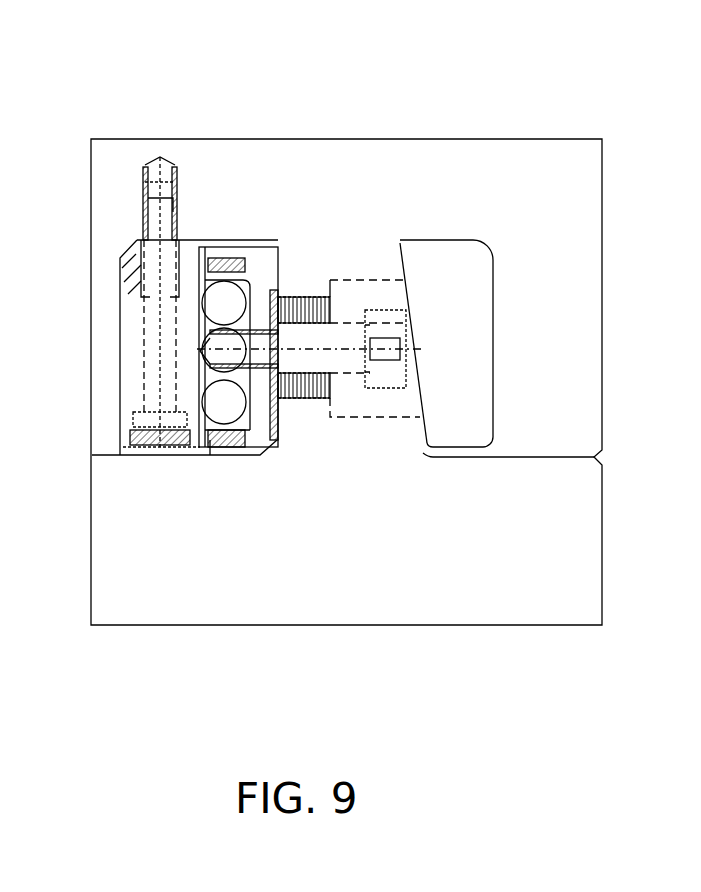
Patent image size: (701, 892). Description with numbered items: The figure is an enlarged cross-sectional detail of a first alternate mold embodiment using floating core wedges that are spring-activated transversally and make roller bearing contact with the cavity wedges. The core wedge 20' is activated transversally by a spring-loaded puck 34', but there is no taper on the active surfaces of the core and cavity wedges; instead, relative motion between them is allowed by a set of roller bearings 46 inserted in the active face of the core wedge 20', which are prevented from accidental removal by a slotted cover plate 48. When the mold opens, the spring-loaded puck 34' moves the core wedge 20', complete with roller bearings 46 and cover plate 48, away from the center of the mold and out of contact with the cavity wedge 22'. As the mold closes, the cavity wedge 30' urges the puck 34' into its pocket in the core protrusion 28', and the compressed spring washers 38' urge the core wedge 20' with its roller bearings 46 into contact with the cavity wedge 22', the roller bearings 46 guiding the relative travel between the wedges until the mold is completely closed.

The cavity wedge 22' is at (184, 255).
The roller bearings 46 is at (223, 300).
The core wedge 20' is at (310, 251).
The core protrusion 28' is at (438, 249).
The cavity wedge 30' is at (381, 340).
The slotted cover plate 48 is at (208, 425).
The spring washers 38' is at (359, 505).
The spring-loaded puck 34' is at (466, 512).